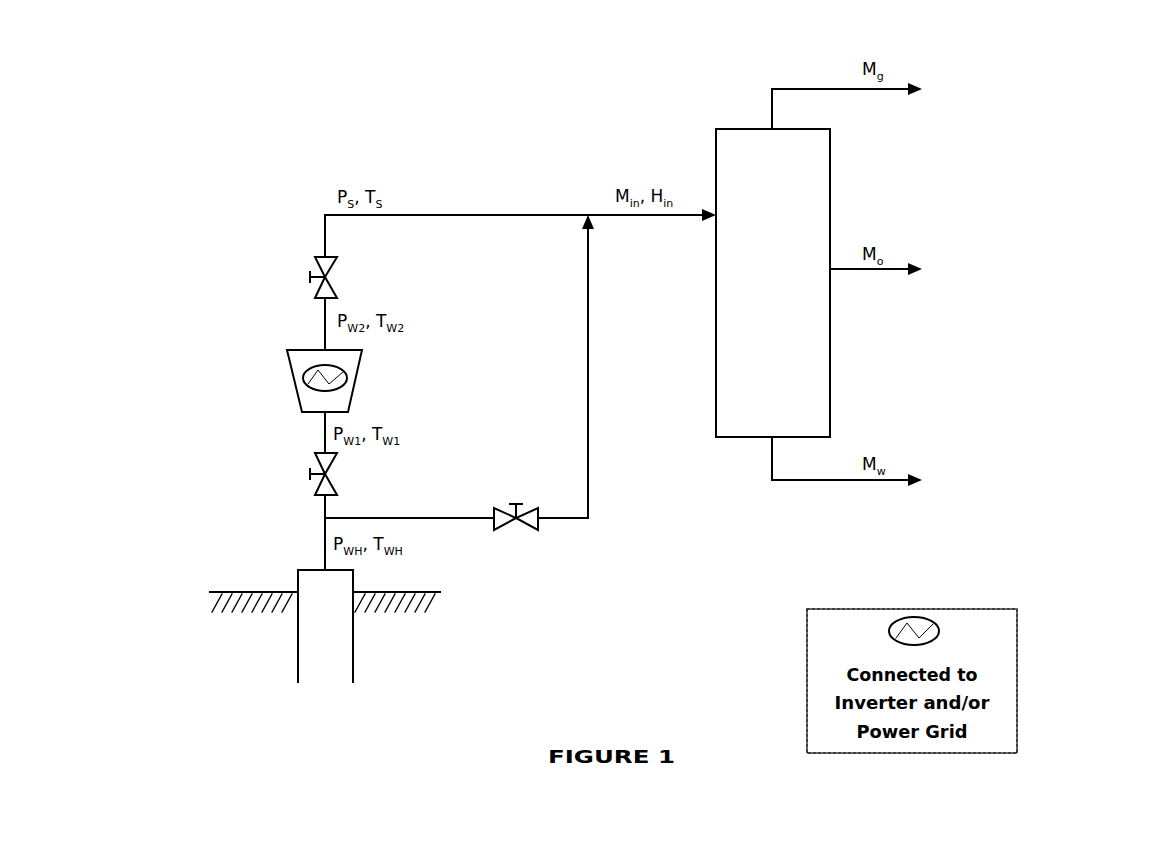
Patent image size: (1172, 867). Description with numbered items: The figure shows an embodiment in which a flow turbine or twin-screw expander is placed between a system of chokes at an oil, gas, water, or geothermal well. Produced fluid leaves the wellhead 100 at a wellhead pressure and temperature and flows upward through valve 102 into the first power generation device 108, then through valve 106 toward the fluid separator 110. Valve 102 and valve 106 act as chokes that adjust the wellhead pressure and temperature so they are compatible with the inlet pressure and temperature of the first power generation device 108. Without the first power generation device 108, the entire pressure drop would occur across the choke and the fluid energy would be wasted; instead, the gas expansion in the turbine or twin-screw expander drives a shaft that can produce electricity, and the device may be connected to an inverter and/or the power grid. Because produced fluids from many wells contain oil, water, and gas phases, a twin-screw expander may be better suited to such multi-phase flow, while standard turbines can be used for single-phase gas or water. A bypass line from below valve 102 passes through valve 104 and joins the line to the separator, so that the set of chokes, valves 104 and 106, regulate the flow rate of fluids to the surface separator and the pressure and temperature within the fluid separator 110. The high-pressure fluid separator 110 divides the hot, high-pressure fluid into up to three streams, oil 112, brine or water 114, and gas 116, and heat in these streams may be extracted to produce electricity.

The wellhead 100 is at (325, 676).
The valve 102 is at (285, 482).
The valve 104 is at (517, 545).
The valve 106 is at (285, 287).
The first power generation device 108 is at (223, 393).
The fluid separator 110 is at (773, 283).
The oil 112 is at (987, 268).
The water 114 is at (962, 479).
The gas 116 is at (962, 103).